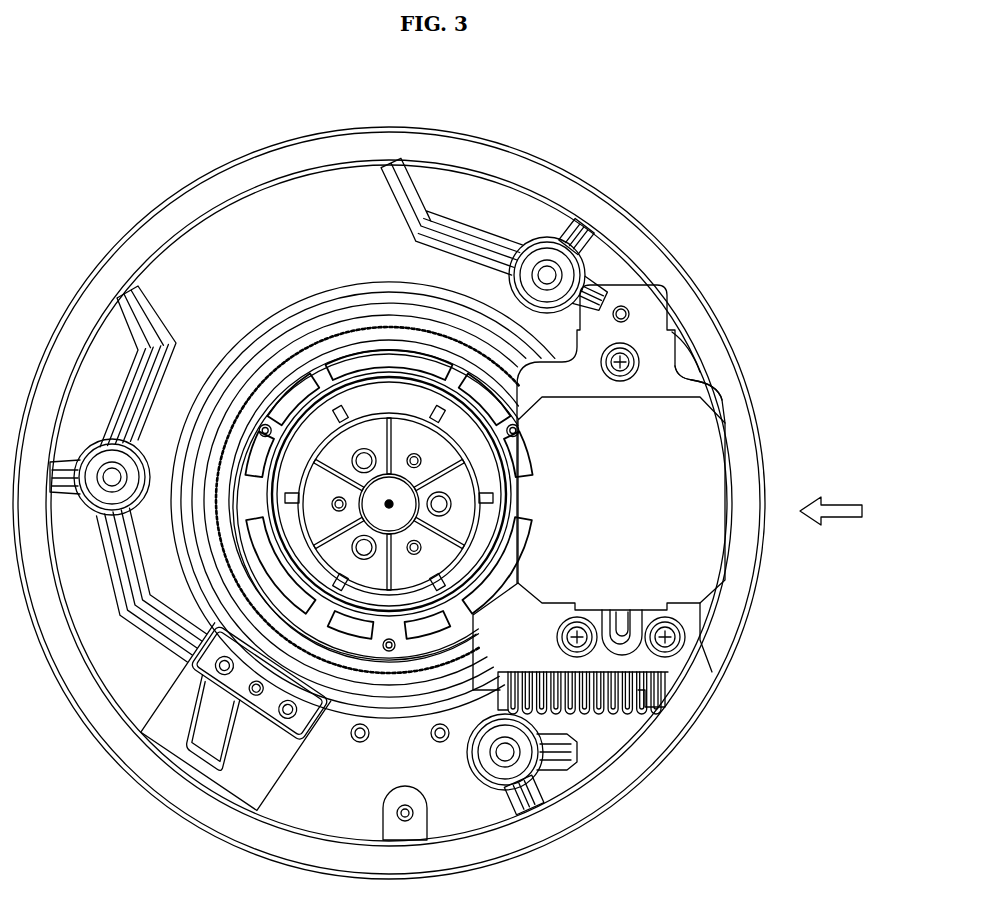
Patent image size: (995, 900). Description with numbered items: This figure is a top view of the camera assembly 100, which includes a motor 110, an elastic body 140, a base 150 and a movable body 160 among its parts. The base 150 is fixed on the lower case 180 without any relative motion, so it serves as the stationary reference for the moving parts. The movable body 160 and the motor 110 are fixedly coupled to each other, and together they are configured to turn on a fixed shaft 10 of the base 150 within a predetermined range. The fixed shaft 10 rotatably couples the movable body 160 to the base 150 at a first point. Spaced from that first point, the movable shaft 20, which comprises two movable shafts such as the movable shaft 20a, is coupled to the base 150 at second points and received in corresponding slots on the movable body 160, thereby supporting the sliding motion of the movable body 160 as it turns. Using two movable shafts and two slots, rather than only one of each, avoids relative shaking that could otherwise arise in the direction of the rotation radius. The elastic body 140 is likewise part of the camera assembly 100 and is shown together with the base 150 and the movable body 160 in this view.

The camera assembly 100 is at (385, 83).
The lower case 180 is at (538, 212).
The motor 110 is at (707, 463).
The base 150 is at (700, 360).
The fixed shaft 10 is at (633, 348).
The movable body 160 is at (700, 627).
The movable shaft 20 is at (775, 770).
The movable shaft 20a is at (592, 648).
The elastic body 140 is at (606, 698).